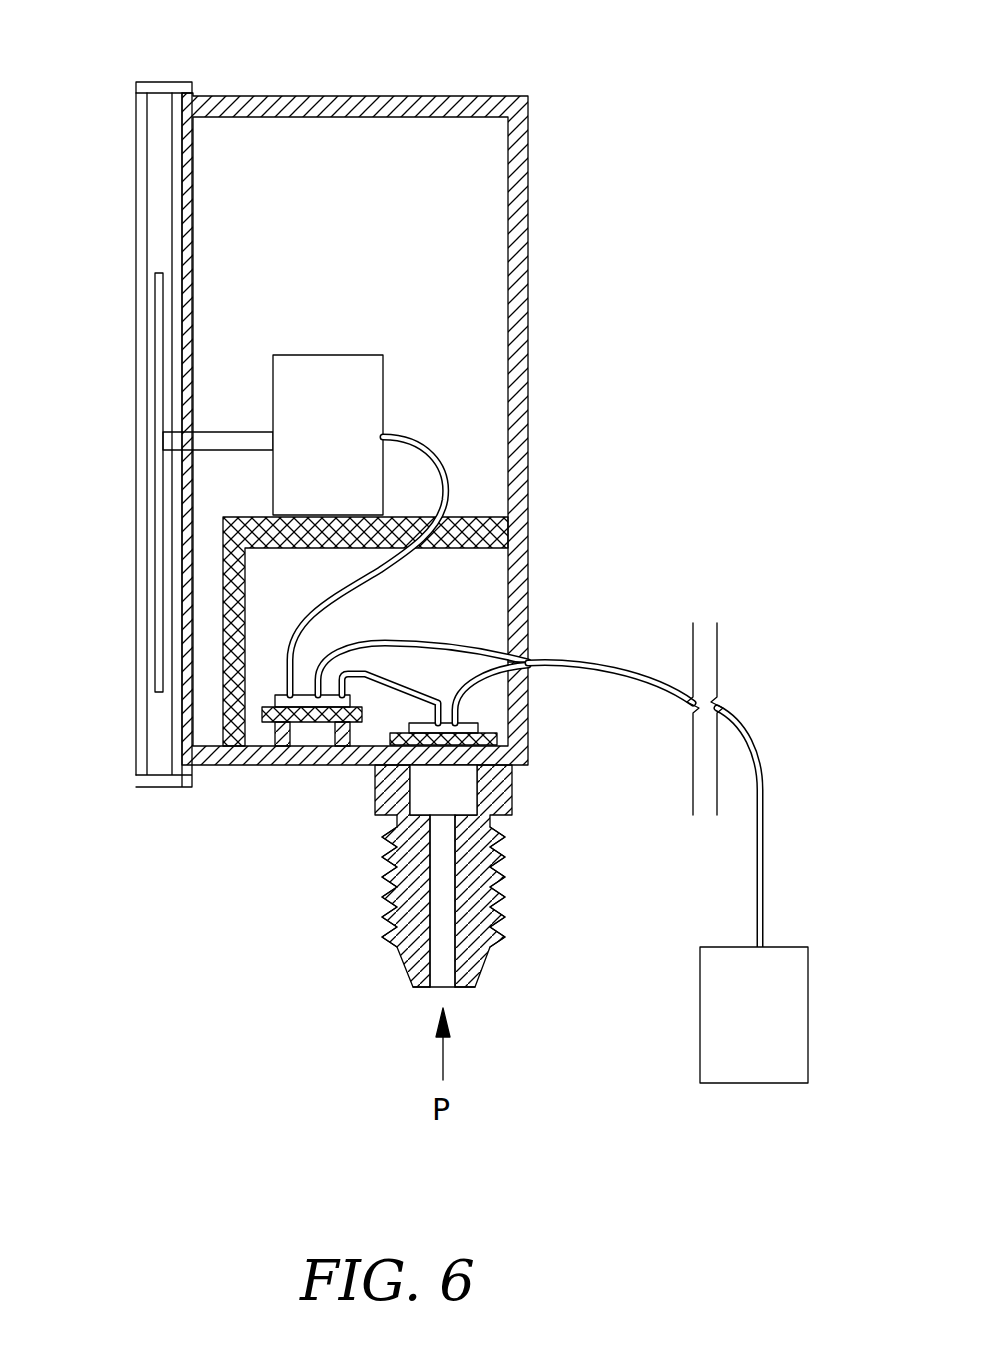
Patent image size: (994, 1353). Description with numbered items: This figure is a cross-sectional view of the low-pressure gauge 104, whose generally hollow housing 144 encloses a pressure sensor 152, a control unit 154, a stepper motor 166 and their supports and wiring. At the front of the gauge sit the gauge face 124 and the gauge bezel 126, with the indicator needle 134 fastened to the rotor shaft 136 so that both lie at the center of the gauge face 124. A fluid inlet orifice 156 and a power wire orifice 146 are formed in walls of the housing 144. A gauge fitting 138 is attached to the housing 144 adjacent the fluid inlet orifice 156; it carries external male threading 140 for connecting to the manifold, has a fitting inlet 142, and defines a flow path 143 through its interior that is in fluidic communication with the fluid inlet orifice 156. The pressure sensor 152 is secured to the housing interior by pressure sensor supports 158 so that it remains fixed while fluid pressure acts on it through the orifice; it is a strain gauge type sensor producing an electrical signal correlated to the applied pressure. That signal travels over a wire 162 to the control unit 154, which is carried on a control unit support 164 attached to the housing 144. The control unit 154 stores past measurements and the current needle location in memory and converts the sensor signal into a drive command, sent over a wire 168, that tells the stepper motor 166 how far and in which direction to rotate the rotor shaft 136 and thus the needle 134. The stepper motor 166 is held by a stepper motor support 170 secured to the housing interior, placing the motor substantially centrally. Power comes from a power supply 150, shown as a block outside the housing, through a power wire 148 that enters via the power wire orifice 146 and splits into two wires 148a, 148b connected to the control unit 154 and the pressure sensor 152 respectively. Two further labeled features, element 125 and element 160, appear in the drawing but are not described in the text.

The low-pressure gauge 104 is at (620, 48).
The gauge face 124 is at (172, 190).
The outer surface of plate 125 is at (137, 133).
The gauge bezel 126 is at (165, 82).
The indicator needle 134 is at (155, 345).
The rotor shaft 136 is at (228, 432).
The gauge fitting 138 is at (385, 878).
The external male threading 140 is at (500, 915).
The fitting inlet 142 is at (432, 988).
The flow path 143 is at (443, 933).
The housing 144 is at (358, 96).
The power wire orifice 146 is at (520, 657).
The power wire 148 is at (628, 665).
The wire 148a is at (432, 643).
The wire 148b is at (500, 688).
The power supply 150 is at (790, 1066).
The pressure sensor 152 is at (443, 790).
The control unit 154 is at (276, 696).
The fluid inlet orifice 156 is at (462, 760).
The pressure sensor support 158 is at (500, 727).
The sensor flange 160 is at (492, 738).
The wire 162 is at (385, 695).
The control unit support 164 is at (277, 740).
The stepper motor 166 is at (355, 355).
The wire 168 is at (332, 598).
The stepper motor support 170 is at (222, 550).